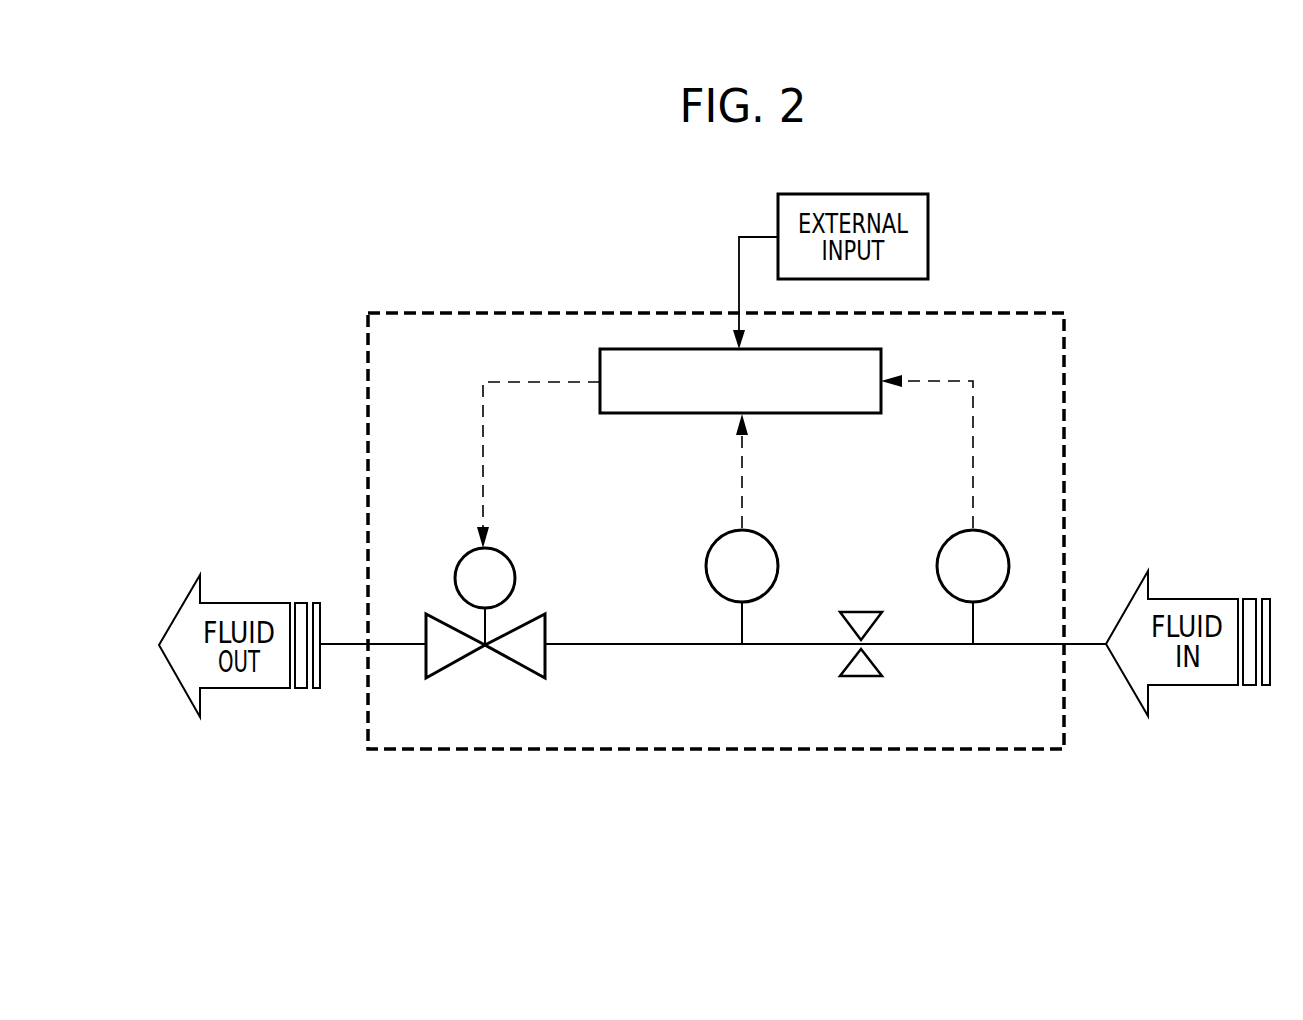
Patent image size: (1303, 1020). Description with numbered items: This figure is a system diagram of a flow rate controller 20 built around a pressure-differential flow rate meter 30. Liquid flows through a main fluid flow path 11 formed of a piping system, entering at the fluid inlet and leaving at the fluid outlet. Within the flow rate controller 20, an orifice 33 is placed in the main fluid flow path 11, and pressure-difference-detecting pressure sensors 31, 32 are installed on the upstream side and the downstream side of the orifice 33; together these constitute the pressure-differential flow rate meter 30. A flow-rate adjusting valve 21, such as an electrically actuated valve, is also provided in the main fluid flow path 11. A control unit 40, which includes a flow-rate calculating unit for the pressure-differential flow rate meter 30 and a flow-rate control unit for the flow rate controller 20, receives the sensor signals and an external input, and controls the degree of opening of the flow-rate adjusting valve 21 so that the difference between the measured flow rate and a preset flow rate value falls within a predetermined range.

The main fluid flow path 11 is at (1003, 646).
The flow rate controller 20 is at (994, 302).
The flow-rate adjusting valve 21 is at (546, 620).
The pressure-differential flow rate meter 30 is at (867, 591).
The pressure-difference-detecting pressure sensor 31 is at (987, 533).
The pressure-difference-detecting pressure sensor 32 is at (761, 532).
The orifice 33 is at (858, 610).
The control unit 40 is at (645, 414).